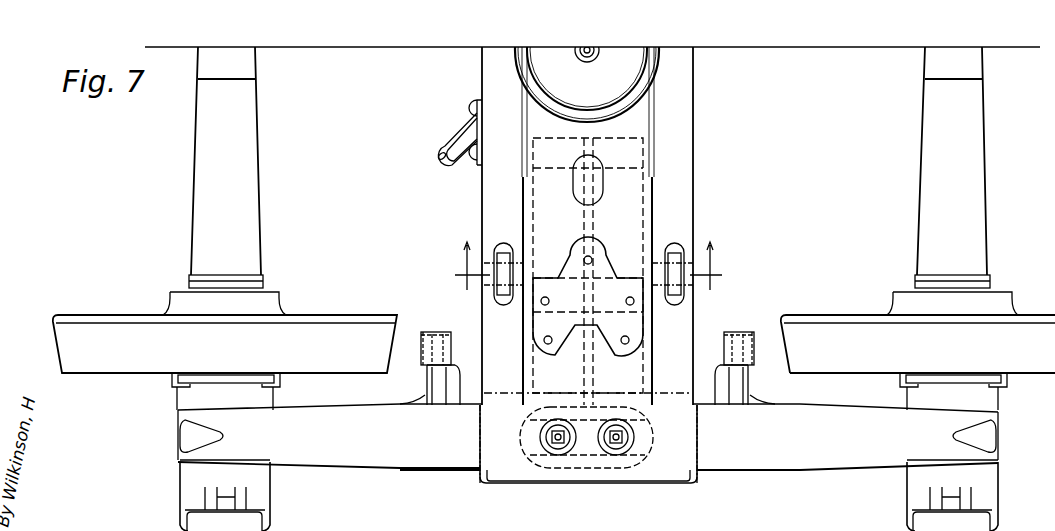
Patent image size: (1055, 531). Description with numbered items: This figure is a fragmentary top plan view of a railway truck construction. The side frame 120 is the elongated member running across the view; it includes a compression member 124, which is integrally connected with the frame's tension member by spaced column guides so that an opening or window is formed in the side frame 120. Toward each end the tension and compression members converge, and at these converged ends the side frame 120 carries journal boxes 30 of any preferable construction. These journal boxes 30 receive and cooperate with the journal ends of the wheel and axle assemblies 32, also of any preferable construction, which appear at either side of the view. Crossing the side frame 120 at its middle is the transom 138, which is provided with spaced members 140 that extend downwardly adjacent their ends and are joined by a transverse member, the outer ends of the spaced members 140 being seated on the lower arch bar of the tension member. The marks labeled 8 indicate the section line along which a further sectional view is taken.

The section line 8- 8 is at (587, 266).
The journal box 30 is at (178, 478).
The wheel and axle assembly 32 is at (117, 322).
The side frame 120 is at (366, 462).
The compression member 124 is at (683, 438).
The transom 138 is at (683, 133).
The spaced member 140 is at (685, 174).